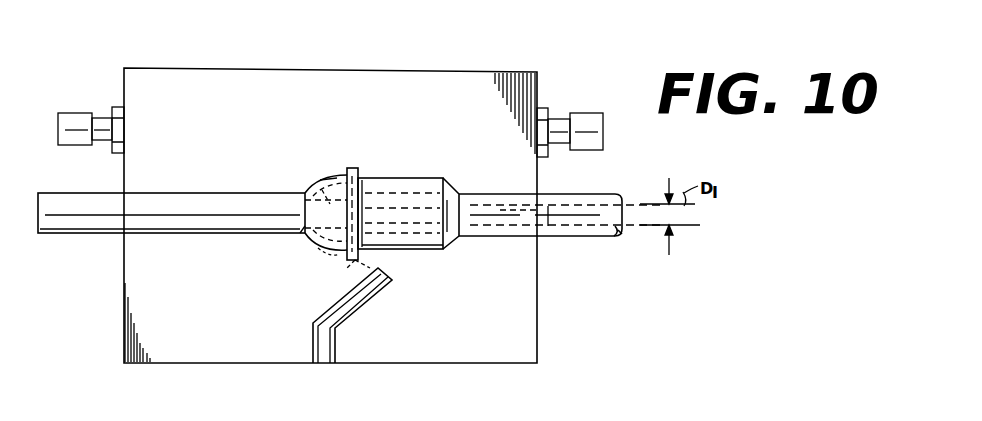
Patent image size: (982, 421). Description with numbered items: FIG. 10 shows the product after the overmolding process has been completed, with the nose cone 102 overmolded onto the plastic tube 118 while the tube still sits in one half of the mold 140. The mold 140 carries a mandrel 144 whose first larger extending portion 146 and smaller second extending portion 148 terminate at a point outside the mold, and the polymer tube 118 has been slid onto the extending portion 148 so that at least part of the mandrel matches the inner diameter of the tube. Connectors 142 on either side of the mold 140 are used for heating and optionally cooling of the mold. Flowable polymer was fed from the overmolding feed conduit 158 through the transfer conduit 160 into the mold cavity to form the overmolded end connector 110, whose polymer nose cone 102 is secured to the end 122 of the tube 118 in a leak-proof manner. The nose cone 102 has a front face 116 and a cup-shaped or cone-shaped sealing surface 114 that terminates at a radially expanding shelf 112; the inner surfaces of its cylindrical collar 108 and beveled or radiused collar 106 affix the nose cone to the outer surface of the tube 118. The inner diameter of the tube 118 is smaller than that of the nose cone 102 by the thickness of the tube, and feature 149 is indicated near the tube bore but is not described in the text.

The mold 140 is at (448, 73).
The connectors 142 is at (74, 113).
The mandrel 144 is at (183, 192).
The sealing surface 114 is at (332, 178).
The radially expanding shelf 112 is at (347, 172).
The first extending portion 146 is at (322, 186).
The end of tube 122 is at (356, 172).
The cylindrical collar 108 is at (410, 178).
The overmolded end connector 110 is at (441, 252).
The beveled or radiused collar 106 is at (457, 194).
The second extending portion 148 is at (515, 208).
The bore opening 149 is at (552, 212).
The polymer tube 118 is at (585, 240).
The front face 116 is at (304, 232).
The nose cone 102 is at (320, 247).
The transfer conduit 160 is at (358, 266).
The overmolding feed conduit 158 is at (357, 315).